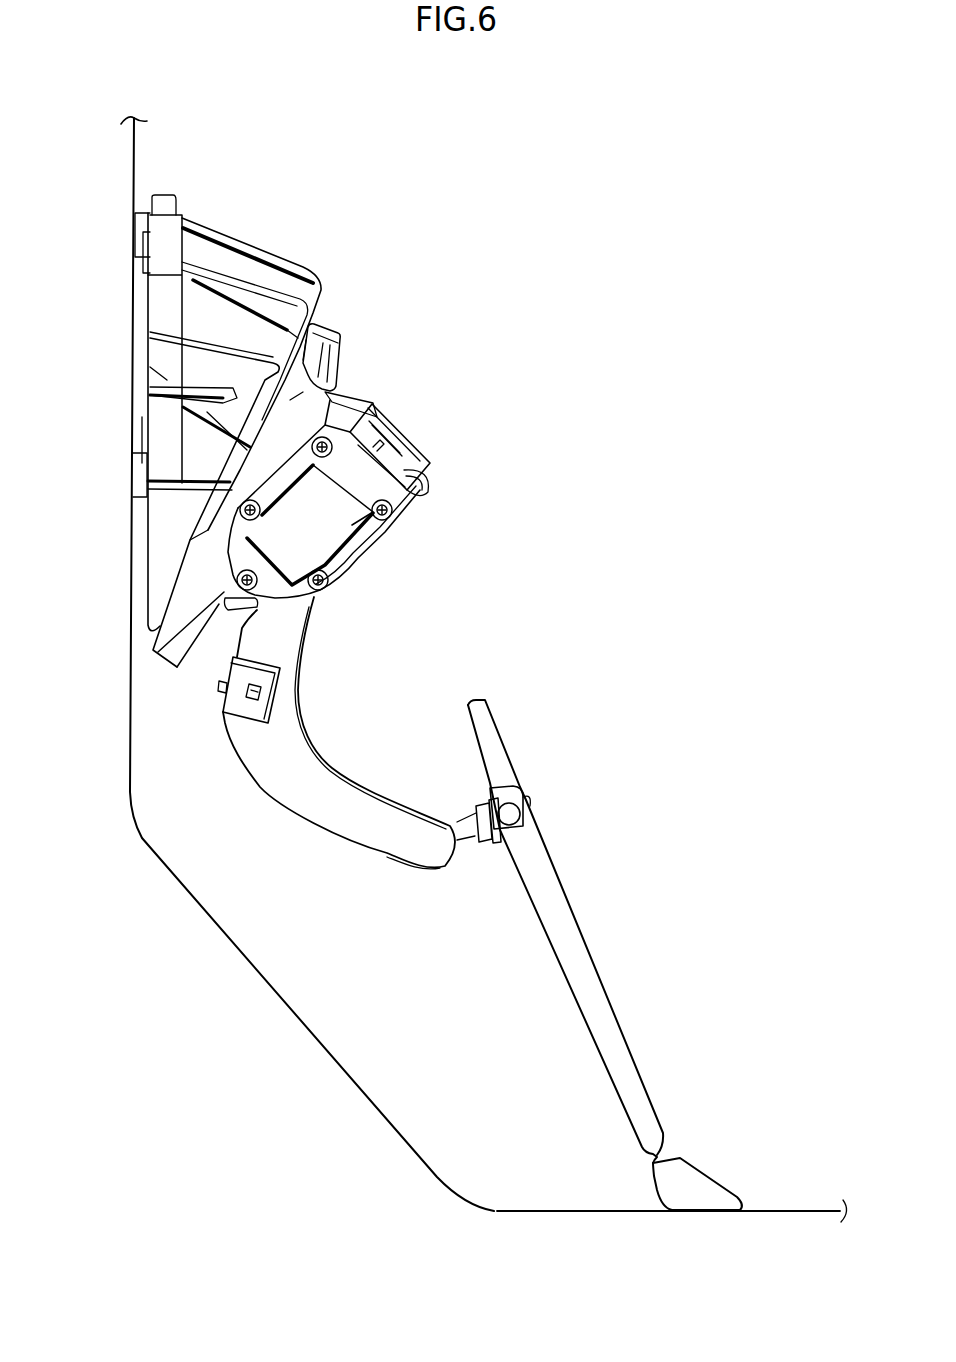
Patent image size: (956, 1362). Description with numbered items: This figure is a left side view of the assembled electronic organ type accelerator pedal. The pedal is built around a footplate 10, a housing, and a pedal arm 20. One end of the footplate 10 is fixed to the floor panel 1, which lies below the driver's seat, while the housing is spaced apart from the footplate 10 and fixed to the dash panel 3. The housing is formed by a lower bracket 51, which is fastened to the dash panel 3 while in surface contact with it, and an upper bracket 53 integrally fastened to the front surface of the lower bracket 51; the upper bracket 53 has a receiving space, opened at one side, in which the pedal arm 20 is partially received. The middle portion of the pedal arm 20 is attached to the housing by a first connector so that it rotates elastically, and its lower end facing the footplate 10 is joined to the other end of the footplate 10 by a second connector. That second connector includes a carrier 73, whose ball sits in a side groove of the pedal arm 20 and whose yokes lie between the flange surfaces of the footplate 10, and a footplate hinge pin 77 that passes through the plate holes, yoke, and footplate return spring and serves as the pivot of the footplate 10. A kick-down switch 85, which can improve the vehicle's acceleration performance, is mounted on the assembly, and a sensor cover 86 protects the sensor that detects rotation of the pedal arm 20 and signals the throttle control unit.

The floor panel 1 is at (565, 1211).
The dash panel 3 is at (133, 147).
The footplate 10 is at (602, 956).
The pedal arm 20 is at (319, 738).
The lower bracket 51 is at (168, 366).
The upper bracket 53 is at (340, 353).
The carrier 73 is at (470, 838).
The footplate hinge pin 77 is at (507, 815).
The kick-down switch 85 is at (218, 685).
The sensor cover 86 is at (403, 433).